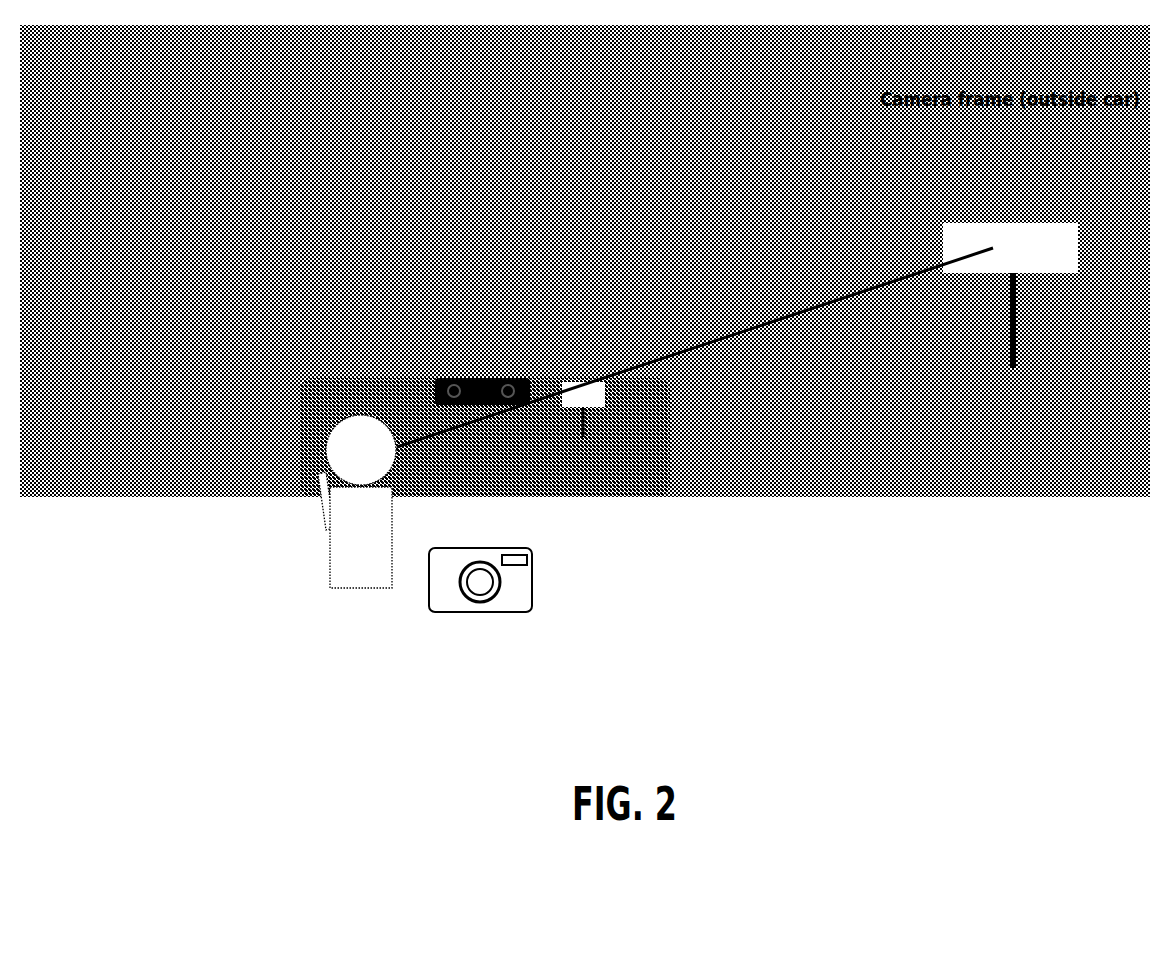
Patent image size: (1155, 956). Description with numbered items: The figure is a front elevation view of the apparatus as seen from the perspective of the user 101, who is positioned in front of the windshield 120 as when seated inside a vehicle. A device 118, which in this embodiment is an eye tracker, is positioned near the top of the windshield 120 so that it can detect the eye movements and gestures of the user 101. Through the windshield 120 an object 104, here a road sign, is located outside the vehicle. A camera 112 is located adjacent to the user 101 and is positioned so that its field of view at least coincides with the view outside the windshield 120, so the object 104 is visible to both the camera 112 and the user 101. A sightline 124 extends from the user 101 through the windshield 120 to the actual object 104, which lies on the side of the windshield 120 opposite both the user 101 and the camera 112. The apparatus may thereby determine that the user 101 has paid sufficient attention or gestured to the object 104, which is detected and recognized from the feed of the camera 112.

The user 101 is at (238, 561).
The object 104 is at (1063, 229).
The camera 112 is at (443, 598).
The device 118 is at (482, 376).
The windshield 120 is at (600, 472).
The sightline 124 is at (805, 312).